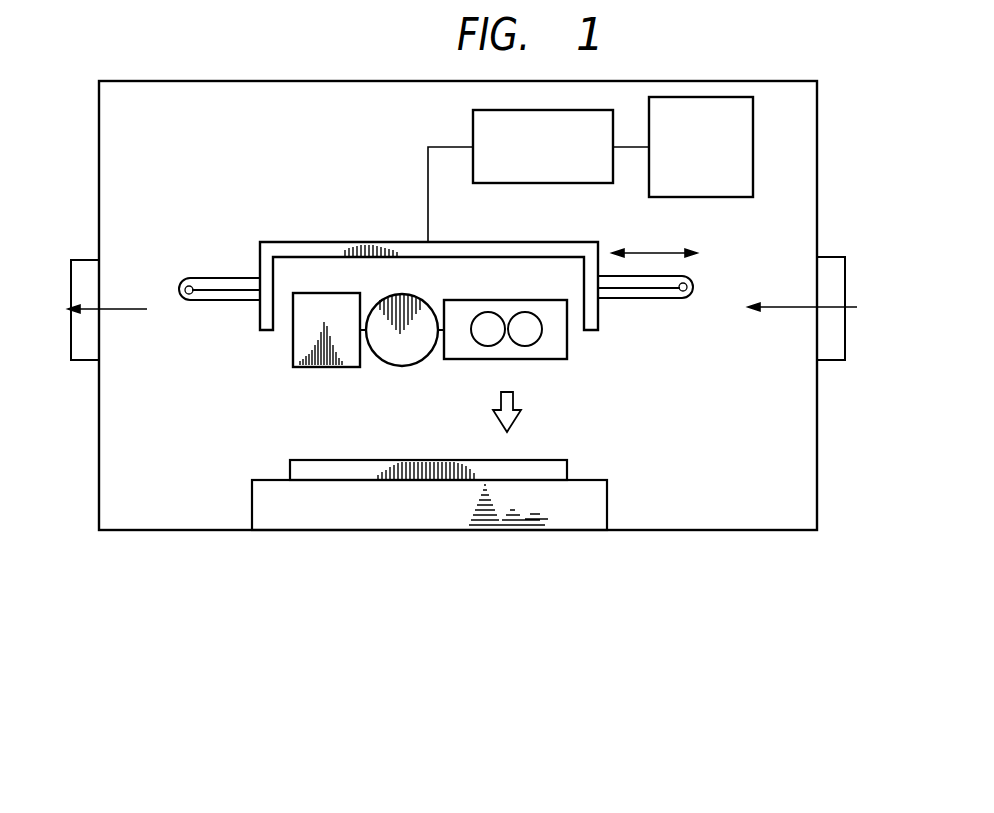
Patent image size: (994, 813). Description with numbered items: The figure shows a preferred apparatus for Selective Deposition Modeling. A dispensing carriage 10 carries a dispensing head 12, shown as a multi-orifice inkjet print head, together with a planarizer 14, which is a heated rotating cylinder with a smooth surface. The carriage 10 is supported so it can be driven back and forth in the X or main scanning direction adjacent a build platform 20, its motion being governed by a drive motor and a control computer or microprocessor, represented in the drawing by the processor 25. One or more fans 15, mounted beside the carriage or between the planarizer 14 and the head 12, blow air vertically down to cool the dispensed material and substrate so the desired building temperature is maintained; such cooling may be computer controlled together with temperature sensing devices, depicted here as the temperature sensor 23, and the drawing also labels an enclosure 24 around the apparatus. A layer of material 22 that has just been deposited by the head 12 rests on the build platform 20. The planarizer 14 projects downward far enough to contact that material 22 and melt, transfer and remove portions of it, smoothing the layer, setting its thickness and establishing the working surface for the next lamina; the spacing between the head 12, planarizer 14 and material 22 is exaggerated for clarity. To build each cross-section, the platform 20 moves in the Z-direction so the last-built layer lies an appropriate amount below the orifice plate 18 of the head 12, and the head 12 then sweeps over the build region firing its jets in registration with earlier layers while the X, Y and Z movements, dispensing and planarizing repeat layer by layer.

The dispensing carriage 10 is at (498, 242).
The dispensing head 12 is at (292, 345).
The planarizer 14 is at (403, 366).
The fans 15 is at (567, 361).
The orifice plate 18 is at (328, 368).
The build platform 20 is at (547, 530).
The layer of material 22 is at (568, 471).
The temperature sensor 23 is at (735, 132).
The housing / chamber 24 is at (817, 473).
The processor 25 is at (487, 123).